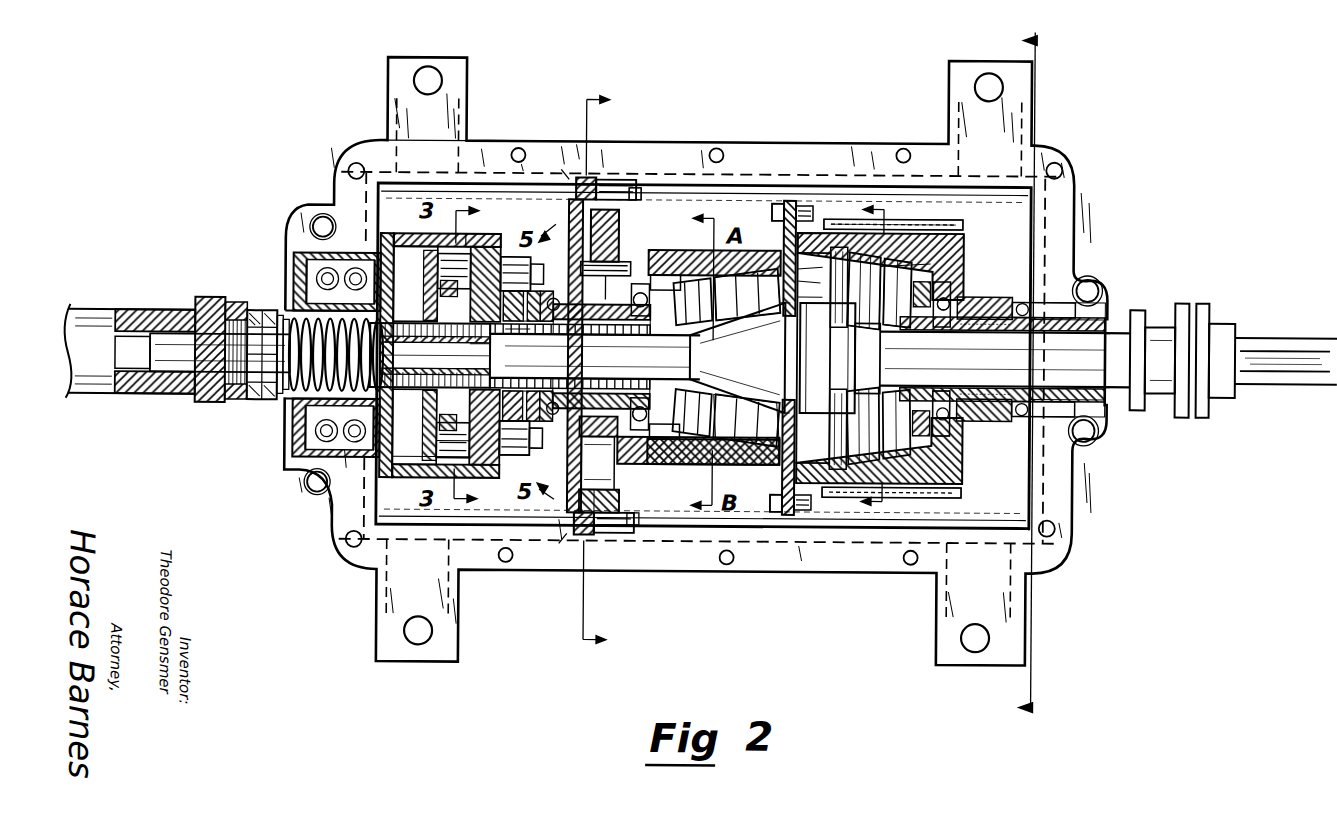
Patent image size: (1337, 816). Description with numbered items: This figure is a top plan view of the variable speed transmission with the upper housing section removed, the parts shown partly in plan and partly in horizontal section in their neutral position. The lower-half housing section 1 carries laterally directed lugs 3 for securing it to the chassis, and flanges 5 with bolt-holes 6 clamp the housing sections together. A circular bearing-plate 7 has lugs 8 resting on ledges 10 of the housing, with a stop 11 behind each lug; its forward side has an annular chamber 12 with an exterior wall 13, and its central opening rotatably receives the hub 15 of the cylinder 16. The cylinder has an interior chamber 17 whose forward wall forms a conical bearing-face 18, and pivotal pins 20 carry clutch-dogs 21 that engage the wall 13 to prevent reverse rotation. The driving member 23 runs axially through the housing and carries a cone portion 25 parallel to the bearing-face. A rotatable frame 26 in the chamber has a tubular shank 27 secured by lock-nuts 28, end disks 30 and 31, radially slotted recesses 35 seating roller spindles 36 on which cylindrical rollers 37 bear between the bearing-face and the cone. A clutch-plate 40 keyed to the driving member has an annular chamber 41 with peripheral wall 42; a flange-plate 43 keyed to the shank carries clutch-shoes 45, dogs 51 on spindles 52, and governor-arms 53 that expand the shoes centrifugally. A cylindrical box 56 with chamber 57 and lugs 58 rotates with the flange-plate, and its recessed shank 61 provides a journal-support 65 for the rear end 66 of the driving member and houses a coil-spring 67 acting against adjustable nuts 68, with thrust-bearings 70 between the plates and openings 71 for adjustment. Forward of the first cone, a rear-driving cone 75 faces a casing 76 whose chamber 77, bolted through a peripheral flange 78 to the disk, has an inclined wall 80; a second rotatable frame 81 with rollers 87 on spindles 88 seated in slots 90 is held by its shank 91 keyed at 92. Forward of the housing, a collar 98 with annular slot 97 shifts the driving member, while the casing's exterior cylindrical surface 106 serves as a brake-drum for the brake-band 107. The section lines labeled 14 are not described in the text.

The lower-half section of the external housing 1 is at (370, 512).
The laterally directed lugs 3 is at (950, 640).
The laterally directed flanges 5 is at (848, 572).
The bolt-holes 6 is at (727, 565).
The circular bearing-plate 7 is at (556, 214).
The lugs 8 is at (588, 536).
The ledges 10 is at (575, 532).
The stop 11 is at (548, 534).
The annular chamber 12 is at (622, 217).
The exterior wall 13 is at (605, 498).
The section plane 14 is at (890, 361).
The hub 15 is at (585, 375).
The cylinder 16 is at (676, 262).
The interior chamber 17 is at (690, 464).
The conical bearing-face 18 is at (742, 262).
The pivotal pins 20 is at (582, 264).
The clutch-dog 21 is at (580, 235).
The driving member 23 is at (1118, 360).
The cone portion 25 is at (758, 400).
The rotatable frame 26 is at (722, 322).
The tubular shank 27 is at (630, 336).
The lock-nuts 28 is at (525, 332).
The end disk 30 is at (810, 270).
The end disk 31 is at (660, 380).
The radially slotted recesses 35 is at (809, 298).
The roller spindles 36 is at (642, 317).
The cylindrical rollers 37 is at (760, 330).
The clutch-plate 40 is at (433, 412).
The annular chamber 41 is at (436, 425).
The peripheral wall 42 is at (440, 452).
The flange-plate 43 is at (500, 450).
The clutch-shoes 45 is at (508, 333).
The dog 51 is at (448, 460).
The spindle 52 is at (512, 447).
The governor-arm 53 is at (512, 420).
The cylindrical box 56 is at (415, 242).
The chamber 57 is at (393, 470).
The lugs 58 is at (500, 228).
The recessed shank 61 is at (285, 402).
The journal-support 65 is at (150, 375).
The rear end of the driving-member 66 is at (187, 368).
The coil-spring 67 is at (388, 360).
The adjustable nuts 68 is at (262, 392).
The thrust-bearings 70 is at (500, 362).
The openings 71 is at (258, 313).
The rear-driving cone 75 is at (800, 404).
The casing 76 is at (950, 247).
The chamber 77 is at (955, 265).
The peripheral flange 78 is at (812, 212).
The wall 80 is at (897, 293).
The rotatable frame 81 is at (928, 334).
The rollers 87 is at (872, 395).
The spindles 88 is at (864, 290).
The slots 90 is at (952, 292).
The shank 91 is at (975, 420).
The key 92 is at (1050, 412).
The annular slot 97 is at (1180, 302).
The collar 98 is at (1137, 407).
The exterior cylindrical surface 106 is at (960, 214).
The brake-band 107 is at (955, 228).